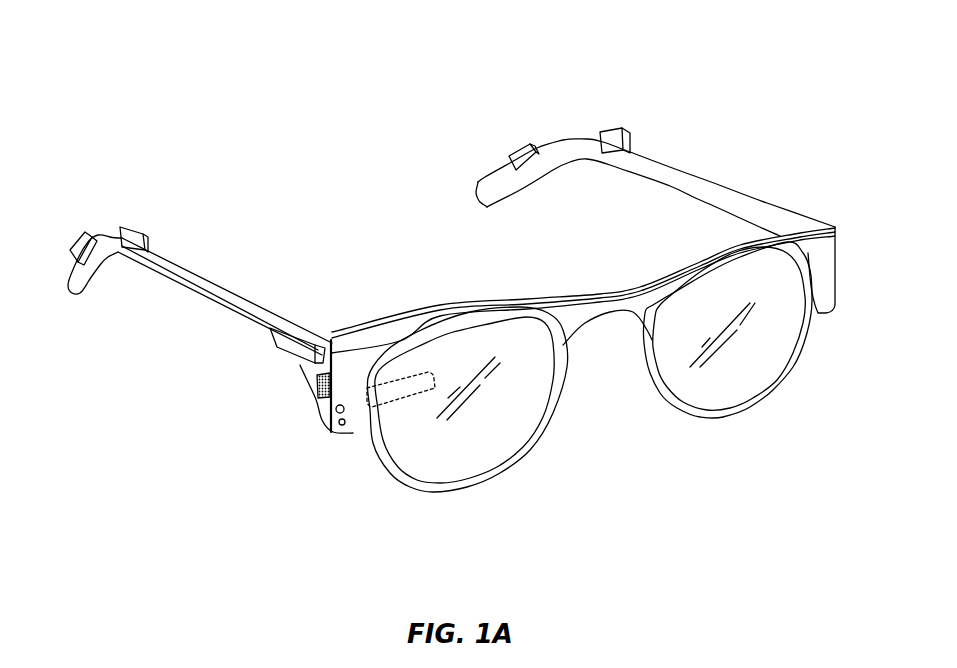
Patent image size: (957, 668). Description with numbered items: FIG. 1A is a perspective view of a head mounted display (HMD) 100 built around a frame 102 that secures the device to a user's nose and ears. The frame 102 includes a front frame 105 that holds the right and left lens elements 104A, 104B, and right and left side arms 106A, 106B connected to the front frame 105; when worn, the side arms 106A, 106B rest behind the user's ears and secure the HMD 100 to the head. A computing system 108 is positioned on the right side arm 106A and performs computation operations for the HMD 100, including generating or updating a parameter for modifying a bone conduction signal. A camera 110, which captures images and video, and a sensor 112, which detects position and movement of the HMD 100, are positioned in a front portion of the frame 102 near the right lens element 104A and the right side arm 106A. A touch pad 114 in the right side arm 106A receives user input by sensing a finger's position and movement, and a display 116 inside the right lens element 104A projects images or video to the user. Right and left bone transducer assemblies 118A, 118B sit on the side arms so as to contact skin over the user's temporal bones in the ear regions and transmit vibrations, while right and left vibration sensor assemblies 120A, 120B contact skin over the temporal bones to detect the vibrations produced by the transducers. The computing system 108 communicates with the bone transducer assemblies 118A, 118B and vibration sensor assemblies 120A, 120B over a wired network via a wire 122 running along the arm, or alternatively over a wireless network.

The head mounted display 100 is at (350, 170).
The frame 102 is at (607, 297).
The right lens element 104A is at (490, 462).
The left lens element 104B is at (747, 388).
The front frame 105 is at (573, 370).
The right side arm 106A is at (187, 292).
The left side arm 106B is at (708, 182).
The computing system 108 is at (293, 333).
The camera 110 is at (333, 418).
The sensor 112 is at (341, 430).
The touch pad 114 is at (313, 393).
The display 116 is at (395, 378).
The right bone transducer assembly 118A is at (137, 227).
The left bone transducer assembly 118B is at (615, 128).
The right vibration sensor assembly 120A is at (67, 237).
The left vibration sensor assembly 120B is at (518, 148).
The wire 122 is at (208, 293).